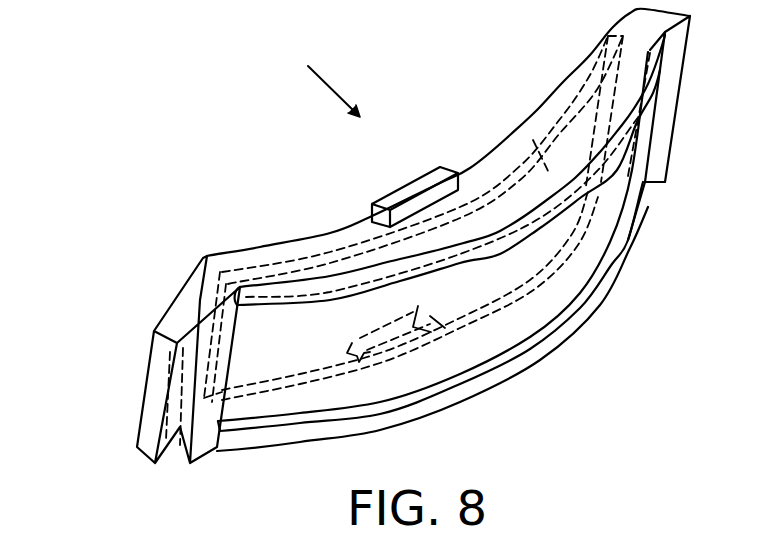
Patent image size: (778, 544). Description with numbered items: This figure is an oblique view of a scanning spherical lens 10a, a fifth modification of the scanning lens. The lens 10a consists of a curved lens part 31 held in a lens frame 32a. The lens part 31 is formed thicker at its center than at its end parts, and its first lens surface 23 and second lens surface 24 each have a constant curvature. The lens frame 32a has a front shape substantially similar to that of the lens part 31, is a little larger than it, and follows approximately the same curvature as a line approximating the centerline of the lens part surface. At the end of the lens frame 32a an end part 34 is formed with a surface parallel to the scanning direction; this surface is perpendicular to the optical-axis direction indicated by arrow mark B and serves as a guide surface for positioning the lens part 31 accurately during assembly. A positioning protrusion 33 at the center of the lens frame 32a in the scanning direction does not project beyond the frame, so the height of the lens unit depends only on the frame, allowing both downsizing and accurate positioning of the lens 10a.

The scanning spherical lens 10a is at (112, 181).
The first lens surface 23 is at (538, 157).
The second lens surface 24 is at (593, 237).
The lens part 31 is at (335, 332).
The lens frame 32a is at (580, 70).
The positioning protrusion 33 is at (413, 176).
The end part 34 is at (167, 327).
The arrow mark B is at (332, 88).